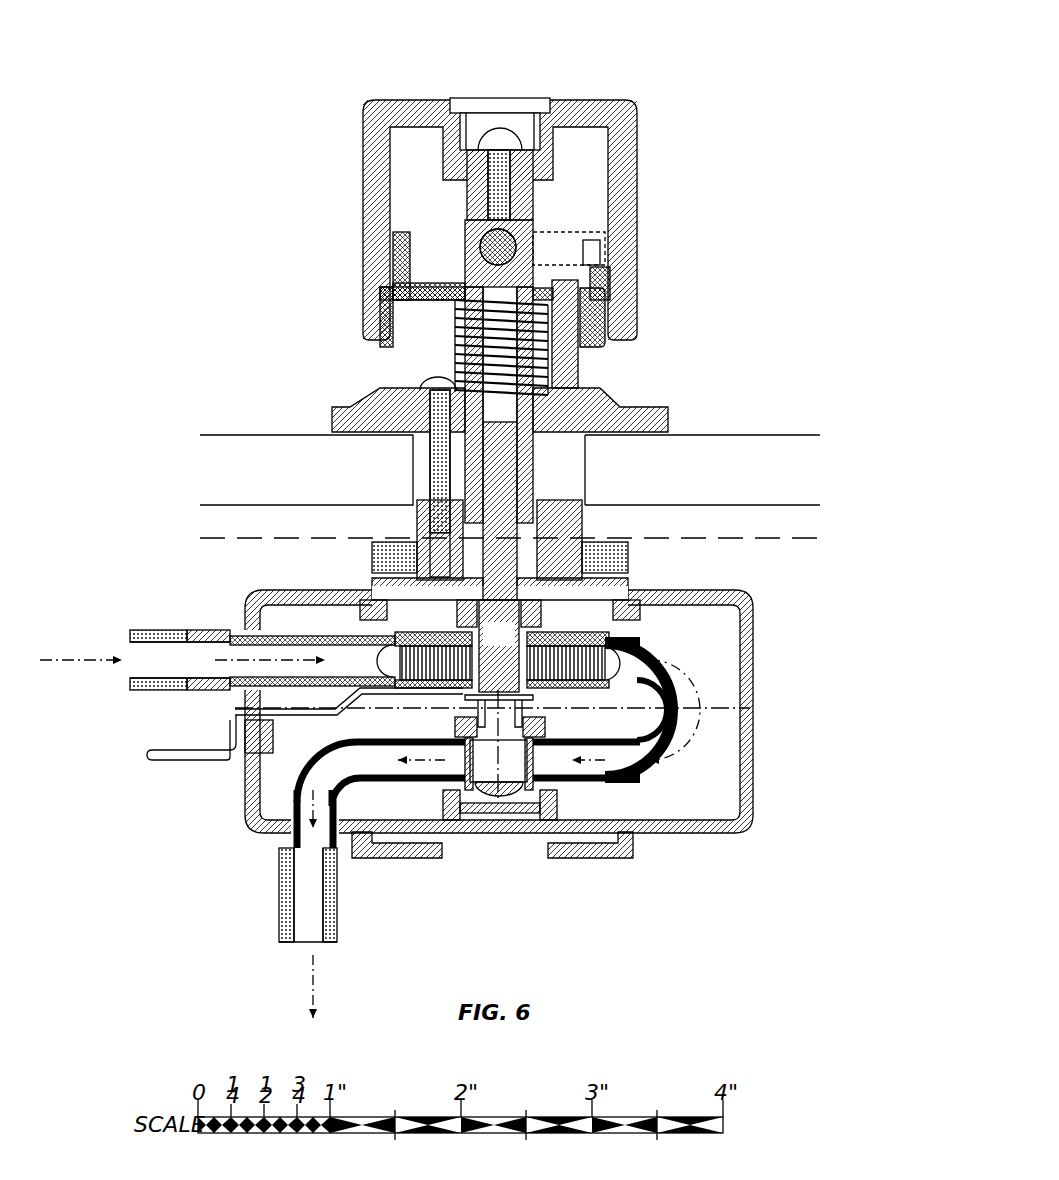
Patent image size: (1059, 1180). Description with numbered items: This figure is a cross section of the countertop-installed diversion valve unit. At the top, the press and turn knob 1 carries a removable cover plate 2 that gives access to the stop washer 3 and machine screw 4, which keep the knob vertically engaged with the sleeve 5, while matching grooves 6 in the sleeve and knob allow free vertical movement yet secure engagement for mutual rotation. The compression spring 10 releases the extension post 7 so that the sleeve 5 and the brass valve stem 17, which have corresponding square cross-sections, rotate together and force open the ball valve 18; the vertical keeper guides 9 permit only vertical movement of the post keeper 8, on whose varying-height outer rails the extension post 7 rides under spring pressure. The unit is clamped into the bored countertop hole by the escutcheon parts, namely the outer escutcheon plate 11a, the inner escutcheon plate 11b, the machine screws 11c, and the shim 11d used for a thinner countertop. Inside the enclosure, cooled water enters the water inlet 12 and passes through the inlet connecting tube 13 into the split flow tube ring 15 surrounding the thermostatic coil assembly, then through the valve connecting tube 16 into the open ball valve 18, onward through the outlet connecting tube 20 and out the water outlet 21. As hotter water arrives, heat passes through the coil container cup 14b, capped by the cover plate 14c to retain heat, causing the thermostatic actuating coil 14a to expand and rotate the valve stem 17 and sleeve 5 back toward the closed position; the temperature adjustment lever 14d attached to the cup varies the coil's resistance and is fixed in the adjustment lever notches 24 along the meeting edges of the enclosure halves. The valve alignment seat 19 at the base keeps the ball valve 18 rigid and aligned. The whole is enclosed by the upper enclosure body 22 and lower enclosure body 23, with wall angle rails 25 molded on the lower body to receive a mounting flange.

The press and turn knob 1 is at (418, 90).
The cover plate 2 is at (485, 92).
The stop washer 3 is at (479, 136).
The machine screw 4 is at (506, 120).
The sleeve 5 is at (541, 212).
The matching grooves 6 is at (468, 146).
The extension post 7 is at (463, 231).
The post keeper 8 is at (622, 264).
The vertical keeper guides 9 is at (622, 306).
The compression spring 10 is at (448, 366).
The outer escutcheon plate 11a is at (603, 384).
The inner escutcheon plate 11b is at (570, 488).
The machine screws 11c is at (381, 477).
The shim 11d is at (620, 536).
The water inlet 12 is at (196, 673).
The inlet connecting tube 13 is at (360, 640).
The thermostatic actuating coil 14a is at (432, 688).
The coil container cup 14b is at (555, 684).
The cover plate 14c is at (438, 630).
The temperature adjustment lever 14d is at (190, 764).
The split flow tube ring 15 is at (642, 640).
The valve connecting tube 16 is at (650, 778).
The brass valve stem 17 is at (512, 646).
The ball valve 18 is at (512, 771).
The valve alignment seat 19 is at (562, 805).
The outlet connecting tube 20 is at (364, 788).
The water outlet 21 is at (324, 913).
The upper enclosure body 22 is at (248, 590).
The lower enclosure body 23 is at (245, 828).
The adjustment lever notches 24 is at (228, 712).
The wall angle rails 25 is at (640, 862).